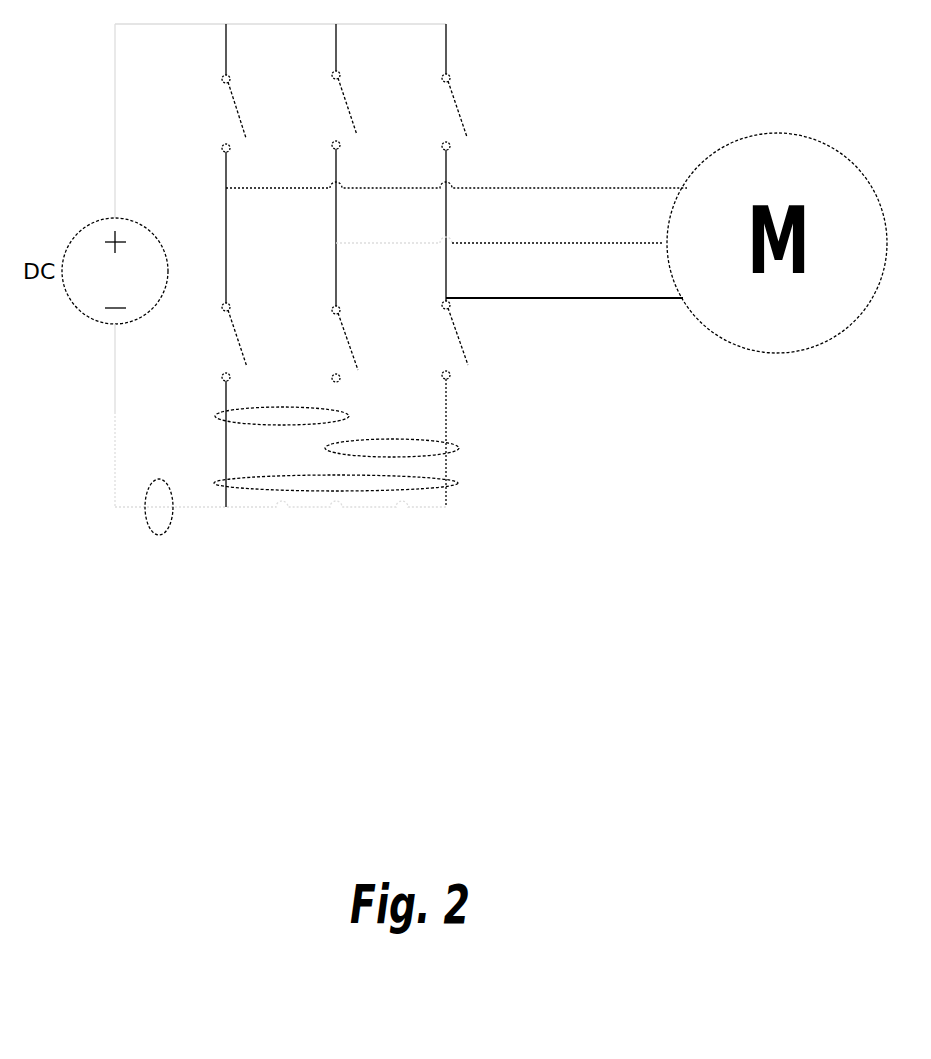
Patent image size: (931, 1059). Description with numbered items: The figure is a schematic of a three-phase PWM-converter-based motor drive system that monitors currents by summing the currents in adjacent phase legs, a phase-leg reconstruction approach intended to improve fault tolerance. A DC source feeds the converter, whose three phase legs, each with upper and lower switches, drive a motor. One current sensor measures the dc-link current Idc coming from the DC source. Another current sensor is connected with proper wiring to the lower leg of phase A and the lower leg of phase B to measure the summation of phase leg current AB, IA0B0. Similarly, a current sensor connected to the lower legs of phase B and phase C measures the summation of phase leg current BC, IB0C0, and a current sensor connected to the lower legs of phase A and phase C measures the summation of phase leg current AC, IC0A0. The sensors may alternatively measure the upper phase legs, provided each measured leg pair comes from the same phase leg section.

The dc-link current Idc is at (160, 535).
The summation of phase leg current AB IA0B0 is at (282, 425).
The summation of phase leg current AC IC0A0 is at (336, 382).
The summation of phase leg current BC IB0C0 is at (402, 457).